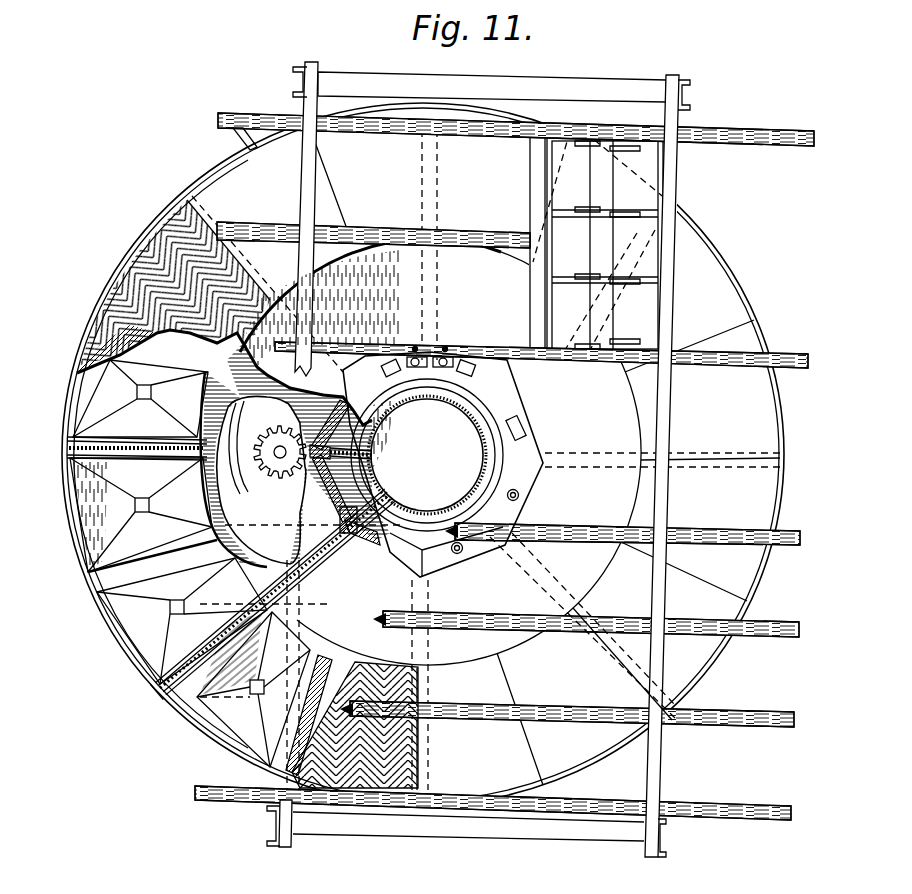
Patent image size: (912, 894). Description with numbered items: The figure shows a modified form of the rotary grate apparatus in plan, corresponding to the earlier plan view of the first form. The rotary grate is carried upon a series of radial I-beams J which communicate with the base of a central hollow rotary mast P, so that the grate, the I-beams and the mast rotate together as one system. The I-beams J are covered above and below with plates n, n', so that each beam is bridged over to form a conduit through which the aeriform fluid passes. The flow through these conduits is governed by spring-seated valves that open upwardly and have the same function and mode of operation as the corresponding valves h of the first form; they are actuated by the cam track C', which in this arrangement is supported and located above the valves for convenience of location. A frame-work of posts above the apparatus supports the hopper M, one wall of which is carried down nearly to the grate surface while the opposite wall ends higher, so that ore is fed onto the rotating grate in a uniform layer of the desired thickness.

The hopper M is at (632, 240).
The cam track C' is at (460, 462).
The hollow rotary mast P is at (427, 455).
The bolts h' is at (488, 480).
The valves h is at (261, 480).
The radial I-beams J is at (70, 446).
The plates n is at (582, 626).
The plates n' is at (312, 575).